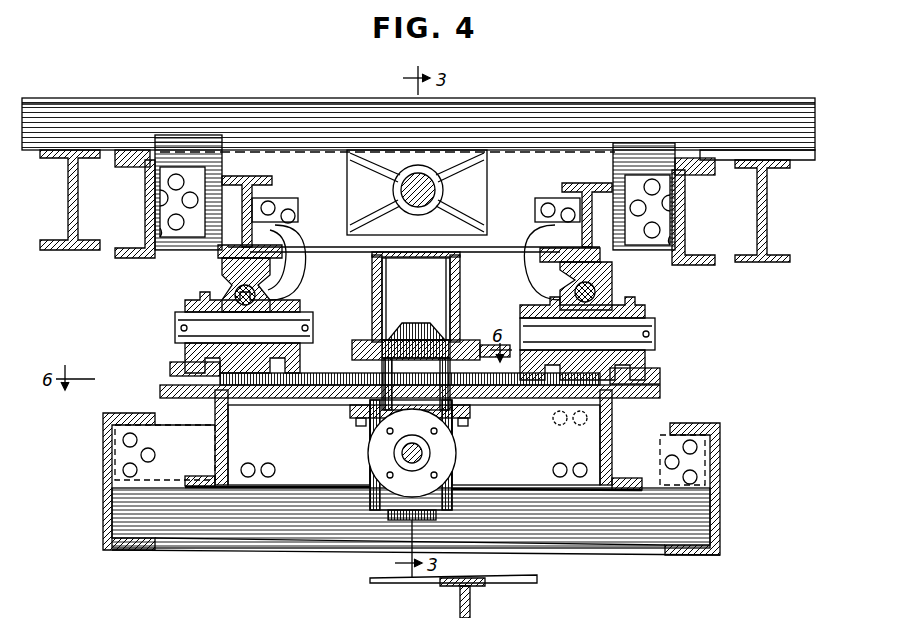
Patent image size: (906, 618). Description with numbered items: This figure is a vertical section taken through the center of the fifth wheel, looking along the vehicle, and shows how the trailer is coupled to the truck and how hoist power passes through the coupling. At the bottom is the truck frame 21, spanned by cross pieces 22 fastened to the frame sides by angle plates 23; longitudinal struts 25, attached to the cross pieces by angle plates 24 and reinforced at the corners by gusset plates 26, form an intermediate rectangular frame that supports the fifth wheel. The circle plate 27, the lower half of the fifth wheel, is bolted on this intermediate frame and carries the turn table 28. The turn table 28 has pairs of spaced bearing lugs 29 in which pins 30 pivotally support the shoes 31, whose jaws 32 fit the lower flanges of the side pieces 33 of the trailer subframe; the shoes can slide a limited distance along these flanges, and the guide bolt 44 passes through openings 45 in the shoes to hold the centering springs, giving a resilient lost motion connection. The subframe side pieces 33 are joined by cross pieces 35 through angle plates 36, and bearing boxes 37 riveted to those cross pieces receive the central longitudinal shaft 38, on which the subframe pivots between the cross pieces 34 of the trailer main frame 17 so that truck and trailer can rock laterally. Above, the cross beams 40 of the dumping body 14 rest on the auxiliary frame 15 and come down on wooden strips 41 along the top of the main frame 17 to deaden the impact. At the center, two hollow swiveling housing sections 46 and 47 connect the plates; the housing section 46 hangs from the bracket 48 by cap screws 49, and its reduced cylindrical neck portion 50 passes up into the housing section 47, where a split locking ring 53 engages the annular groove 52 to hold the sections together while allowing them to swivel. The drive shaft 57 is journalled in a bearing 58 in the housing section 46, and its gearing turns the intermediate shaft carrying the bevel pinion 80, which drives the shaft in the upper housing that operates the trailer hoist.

The rear dumping body 14 is at (390, 583).
The auxiliary frame 15 is at (68, 250).
The main frame 17 is at (135, 258).
The truck frame 21 is at (106, 500).
The cross pieces 22 is at (178, 456).
The angle plates 23 is at (118, 452).
The angle plates 24 is at (276, 470).
The longitudinal struts 25 is at (208, 482).
The gusset plates 26 is at (205, 488).
The circle plate 27 is at (162, 380).
The turn table 28 is at (178, 364).
The bearing lugs 29 is at (185, 302).
The pins 30 is at (280, 325).
The shoes 31 is at (305, 270).
The jaws 32 is at (290, 237).
The side pieces 33 is at (252, 178).
The cross pieces 34 is at (208, 152).
The cross pieces 35 is at (582, 162).
The angle plates 36 is at (278, 198).
The bearing boxes 37 is at (445, 200).
The shaft 38 is at (425, 178).
The cross beams 40 is at (98, 108).
The wooden strips 41 is at (135, 167).
The guide bolt 44 is at (612, 290).
The openings 45 is at (235, 294).
The housing section 46 is at (458, 464).
The housing section 47 is at (462, 290).
The bracket 48 is at (355, 405).
The cap screws 49 is at (362, 426).
The neck portion 50 is at (416, 384).
The annular groove 52 is at (405, 360).
The split locking ring 53 is at (470, 350).
The drive shaft 57 is at (398, 456).
The bearing 58 is at (430, 448).
The bevel pinion 80 is at (410, 322).